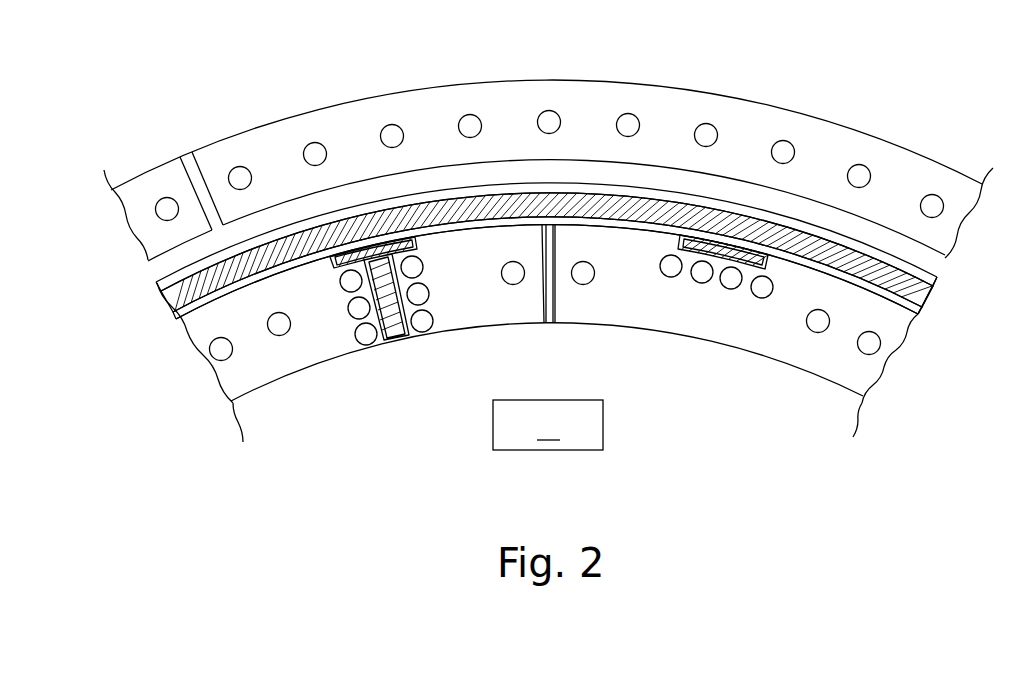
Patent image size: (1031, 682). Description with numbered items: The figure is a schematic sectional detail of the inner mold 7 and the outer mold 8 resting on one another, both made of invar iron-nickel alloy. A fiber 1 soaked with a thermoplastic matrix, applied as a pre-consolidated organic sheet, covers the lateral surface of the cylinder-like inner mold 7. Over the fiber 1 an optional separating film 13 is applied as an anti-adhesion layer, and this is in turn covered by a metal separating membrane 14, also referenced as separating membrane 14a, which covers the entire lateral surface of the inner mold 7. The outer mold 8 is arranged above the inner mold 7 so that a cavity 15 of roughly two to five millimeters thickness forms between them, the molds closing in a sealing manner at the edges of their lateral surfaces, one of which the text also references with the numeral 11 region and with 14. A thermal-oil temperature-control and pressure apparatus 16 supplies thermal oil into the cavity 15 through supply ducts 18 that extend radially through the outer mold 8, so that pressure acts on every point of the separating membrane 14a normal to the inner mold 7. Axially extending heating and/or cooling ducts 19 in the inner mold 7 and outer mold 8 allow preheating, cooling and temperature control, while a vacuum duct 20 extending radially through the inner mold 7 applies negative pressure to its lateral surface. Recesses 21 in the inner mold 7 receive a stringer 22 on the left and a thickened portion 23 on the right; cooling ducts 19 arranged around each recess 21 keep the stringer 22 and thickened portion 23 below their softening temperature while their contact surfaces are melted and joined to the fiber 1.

The fiber soaked with thermoplastic matrix 1 is at (926, 296).
The inner mold 7 is at (865, 380).
The outer mold 8 is at (892, 164).
The inner surface 11 is at (920, 318).
The separating film 13 is at (177, 312).
The separating membrane 14 is at (158, 284).
The separating membrane 14a is at (166, 300).
The cavity 15 is at (938, 265).
The thermal-oil temperature-control and pressure apparatus 16 is at (548, 425).
The supply ducts 18 is at (186, 157).
The heating and/or cooling ducts 19 is at (550, 110).
The vacuum duct 20 is at (558, 330).
The recesses 21 is at (368, 347).
The stringer 22 is at (403, 335).
The thickened portion 23 is at (716, 262).